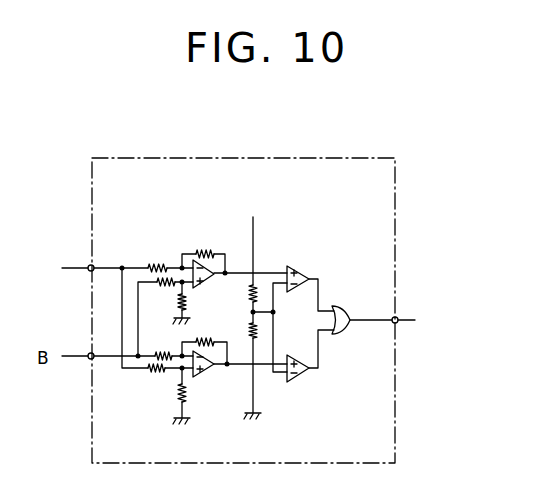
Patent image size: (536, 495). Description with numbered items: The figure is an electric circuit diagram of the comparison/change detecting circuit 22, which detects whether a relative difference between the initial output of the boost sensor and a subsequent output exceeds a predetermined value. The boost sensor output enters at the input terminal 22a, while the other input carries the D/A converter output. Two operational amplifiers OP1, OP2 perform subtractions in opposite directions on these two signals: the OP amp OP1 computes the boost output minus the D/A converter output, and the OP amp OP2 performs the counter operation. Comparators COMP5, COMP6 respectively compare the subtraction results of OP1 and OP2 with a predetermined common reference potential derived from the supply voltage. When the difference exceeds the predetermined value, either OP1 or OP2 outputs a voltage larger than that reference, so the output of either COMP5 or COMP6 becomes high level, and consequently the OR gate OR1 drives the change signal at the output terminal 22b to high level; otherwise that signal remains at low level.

The comparison/change detecting circuit 22 is at (341, 151).
The input terminal 22a is at (89, 266).
The output terminal 22b is at (397, 323).
The operational amplifier OP1 is at (205, 283).
The operational amplifier OP2 is at (205, 374).
The comparator COMP5 is at (313, 259).
The comparator COMP6 is at (302, 376).
The OR gate OR1 is at (346, 328).